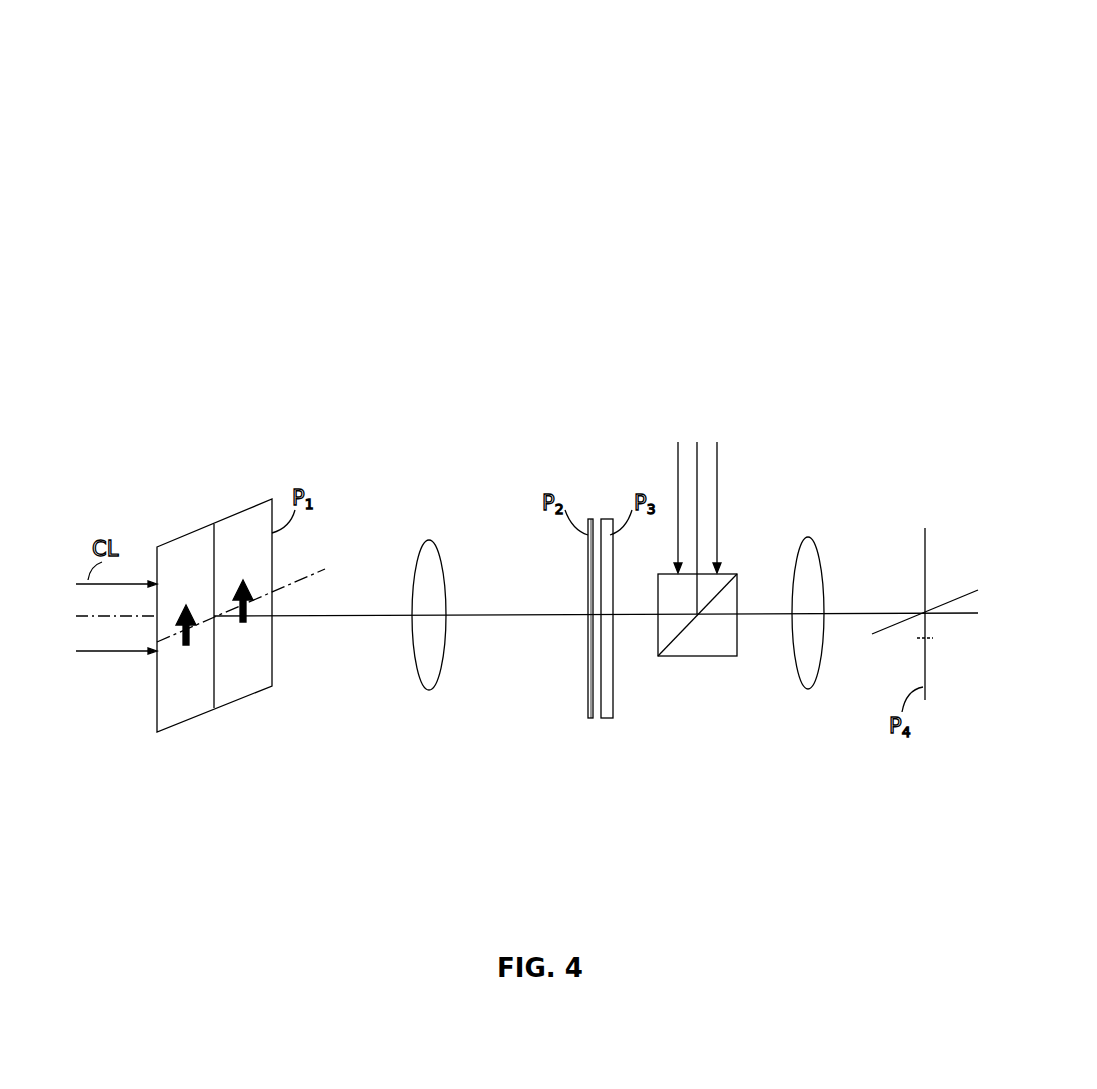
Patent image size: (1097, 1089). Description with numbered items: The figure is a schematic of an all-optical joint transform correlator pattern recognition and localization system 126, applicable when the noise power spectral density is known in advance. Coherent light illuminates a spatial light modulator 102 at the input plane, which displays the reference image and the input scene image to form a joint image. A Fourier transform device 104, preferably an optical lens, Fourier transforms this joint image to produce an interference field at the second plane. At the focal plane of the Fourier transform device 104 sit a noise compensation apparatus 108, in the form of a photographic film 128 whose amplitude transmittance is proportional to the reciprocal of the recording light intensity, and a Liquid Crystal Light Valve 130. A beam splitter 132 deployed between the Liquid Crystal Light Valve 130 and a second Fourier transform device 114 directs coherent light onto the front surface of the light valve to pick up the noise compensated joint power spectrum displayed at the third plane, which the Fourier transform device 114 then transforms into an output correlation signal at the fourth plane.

The all-optical JTC pattern recognition and localization system 126 is at (760, 80).
The spatial light modulator 102 is at (190, 546).
The Fourier transform device 104 is at (430, 552).
The noise compensation apparatus 108 is at (591, 679).
The photographic film 128 is at (591, 710).
The Liquid Crystal Light Valve 130 is at (608, 522).
The beam splitter 132 is at (710, 646).
The Fourier transform device 114 is at (808, 552).